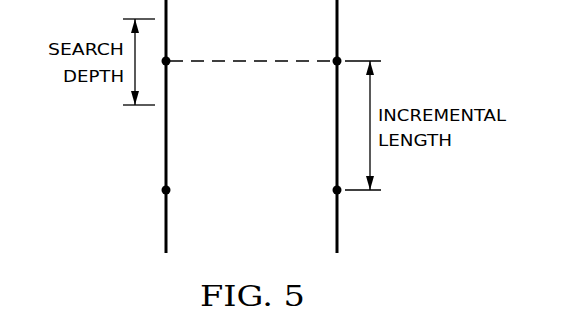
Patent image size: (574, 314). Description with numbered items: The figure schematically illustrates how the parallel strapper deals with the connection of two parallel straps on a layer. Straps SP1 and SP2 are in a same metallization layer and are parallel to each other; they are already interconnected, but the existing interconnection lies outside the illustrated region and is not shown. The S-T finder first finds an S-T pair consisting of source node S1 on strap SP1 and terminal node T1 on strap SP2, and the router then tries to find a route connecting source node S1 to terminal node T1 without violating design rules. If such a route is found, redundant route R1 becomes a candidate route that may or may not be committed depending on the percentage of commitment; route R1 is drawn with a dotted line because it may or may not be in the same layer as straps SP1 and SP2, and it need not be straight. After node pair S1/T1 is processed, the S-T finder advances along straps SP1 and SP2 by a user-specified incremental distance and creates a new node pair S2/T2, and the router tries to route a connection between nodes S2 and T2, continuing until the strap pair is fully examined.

The strap SP1 is at (147, 126).
The strap SP2 is at (357, 126).
The source node S1 is at (177, 52).
The node S2 is at (181, 192).
The terminal node T1 is at (325, 52).
The node T2 is at (324, 191).
The redundant route R1 is at (251, 50).